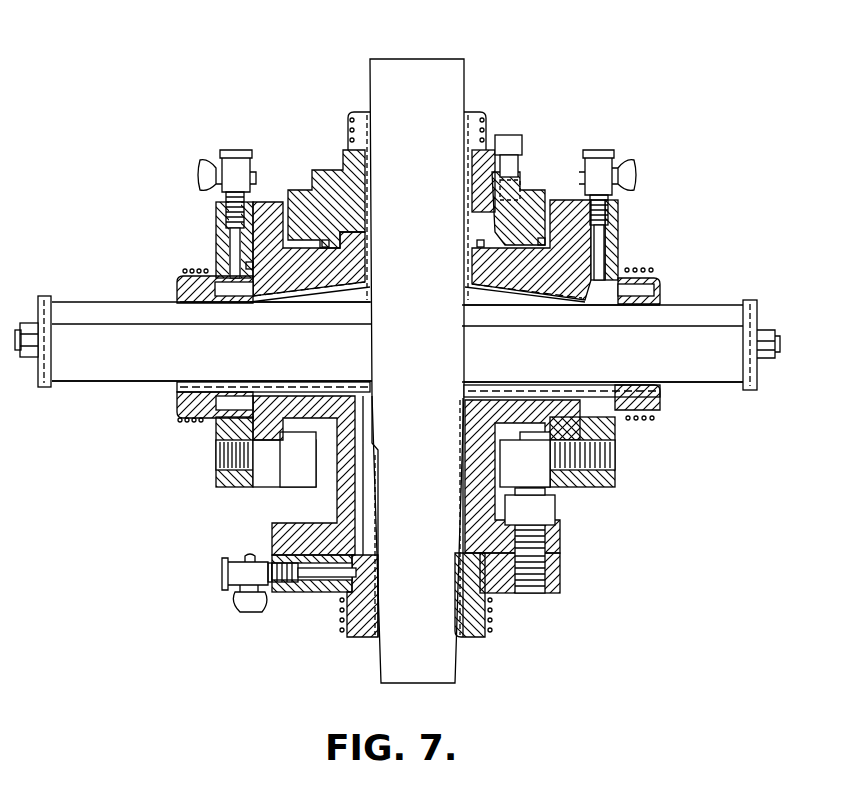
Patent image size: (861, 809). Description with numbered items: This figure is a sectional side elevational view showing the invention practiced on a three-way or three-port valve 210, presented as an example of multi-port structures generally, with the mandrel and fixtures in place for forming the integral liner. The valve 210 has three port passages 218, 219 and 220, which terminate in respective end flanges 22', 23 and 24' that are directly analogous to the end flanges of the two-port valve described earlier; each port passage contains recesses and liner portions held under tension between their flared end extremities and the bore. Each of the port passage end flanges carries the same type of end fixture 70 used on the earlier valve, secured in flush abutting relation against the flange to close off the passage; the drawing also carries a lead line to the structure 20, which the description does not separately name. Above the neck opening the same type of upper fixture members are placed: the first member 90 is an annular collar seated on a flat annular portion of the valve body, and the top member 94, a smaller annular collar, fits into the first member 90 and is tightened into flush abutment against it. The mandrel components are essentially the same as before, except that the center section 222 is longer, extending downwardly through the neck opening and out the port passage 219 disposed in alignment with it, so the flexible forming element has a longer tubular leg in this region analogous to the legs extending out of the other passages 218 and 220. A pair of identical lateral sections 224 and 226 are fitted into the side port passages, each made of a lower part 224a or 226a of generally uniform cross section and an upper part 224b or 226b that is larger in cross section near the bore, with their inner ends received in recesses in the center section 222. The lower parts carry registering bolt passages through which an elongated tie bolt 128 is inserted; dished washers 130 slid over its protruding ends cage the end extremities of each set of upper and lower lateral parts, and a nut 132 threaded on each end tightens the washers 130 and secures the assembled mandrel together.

The center section 222 is at (433, 78).
The top member 94 is at (483, 140).
The three-way valve 210 is at (600, 90).
The end flange 24' is at (310, 216).
The first fitting or fixture member 90 is at (525, 200).
The end flange 22' is at (545, 228).
The bearing housing 20 is at (584, 191).
The lateral section 226 is at (117, 313).
The lower part 226a is at (198, 370).
The upper part 226b is at (318, 325).
The lateral section 224 is at (674, 322).
The lower part 224a is at (670, 370).
The upper part 224b is at (525, 325).
The dished washer 130 is at (752, 300).
The nut 132 is at (772, 328).
The tie bolt 128 is at (780, 340).
The port passage 220 is at (305, 372).
The port passage 218 is at (476, 395).
The port passage 219 is at (374, 500).
The end fitting or fixture 70 is at (207, 422).
The end flange 23 is at (552, 545).